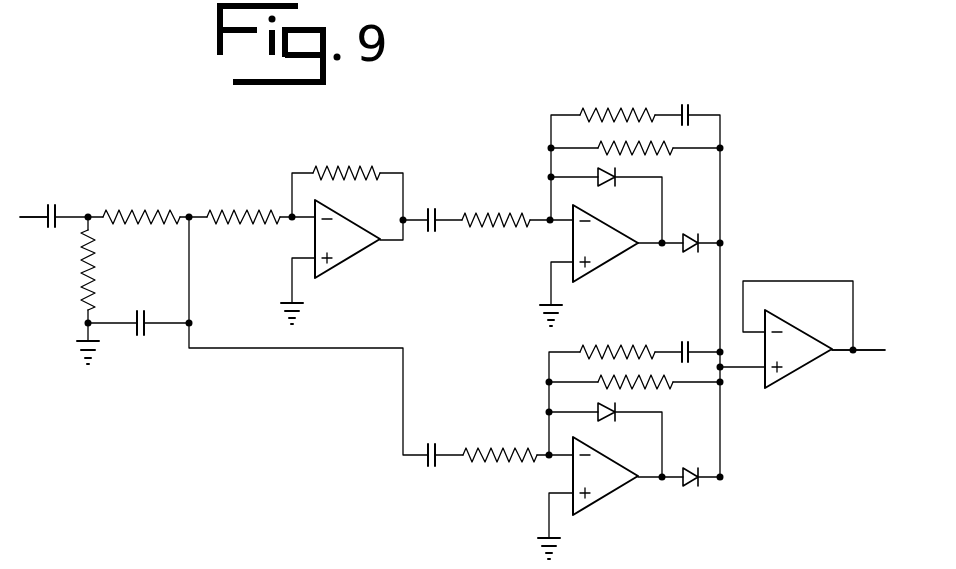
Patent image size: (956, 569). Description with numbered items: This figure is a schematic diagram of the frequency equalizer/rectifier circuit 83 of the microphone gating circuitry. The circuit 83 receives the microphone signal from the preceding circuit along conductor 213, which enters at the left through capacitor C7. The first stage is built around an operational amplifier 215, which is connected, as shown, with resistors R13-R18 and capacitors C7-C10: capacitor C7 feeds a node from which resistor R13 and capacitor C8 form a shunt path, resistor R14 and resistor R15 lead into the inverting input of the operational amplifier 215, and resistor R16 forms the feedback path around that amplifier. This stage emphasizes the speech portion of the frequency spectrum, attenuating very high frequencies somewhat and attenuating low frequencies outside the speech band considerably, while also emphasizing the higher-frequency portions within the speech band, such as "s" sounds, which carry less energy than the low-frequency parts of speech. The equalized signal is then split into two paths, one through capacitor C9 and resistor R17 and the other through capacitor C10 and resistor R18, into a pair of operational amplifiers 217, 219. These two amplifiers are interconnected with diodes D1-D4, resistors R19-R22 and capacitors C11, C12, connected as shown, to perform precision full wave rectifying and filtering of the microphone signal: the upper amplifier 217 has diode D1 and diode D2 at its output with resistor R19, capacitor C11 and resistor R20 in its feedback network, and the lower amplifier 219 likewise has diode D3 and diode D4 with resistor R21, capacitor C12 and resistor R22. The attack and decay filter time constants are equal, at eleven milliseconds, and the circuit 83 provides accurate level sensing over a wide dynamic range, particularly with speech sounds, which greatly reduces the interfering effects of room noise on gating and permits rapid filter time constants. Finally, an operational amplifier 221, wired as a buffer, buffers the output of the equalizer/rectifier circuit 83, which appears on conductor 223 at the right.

The conductor 213 is at (33, 213).
The capacitor C7 is at (60, 205).
The resistor R14 is at (141, 204).
The resistor R15 is at (243, 204).
The resistor R13 is at (70, 270).
The capacitor C8 is at (140, 312).
The resistor R16 is at (346, 162).
The operational amplifier 215 is at (355, 250).
The capacitor C9 is at (430, 209).
The resistor R17 is at (496, 210).
The resistor R19 is at (617, 102).
The capacitor C11 is at (686, 103).
The resistor R20 is at (635, 137).
The diode D1 is at (623, 171).
The diode D2 is at (691, 231).
The operational amplifier 217 is at (607, 253).
The resistor R21 is at (617, 341).
The capacitor C12 is at (686, 343).
The resistor R22 is at (635, 372).
The diode D3 is at (623, 405).
The diode D4 is at (691, 465).
The operational amplifier 219 is at (607, 489).
The capacitor C10 is at (436, 442).
The resistor R18 is at (500, 443).
The operational amplifier 221 is at (800, 357).
The conductor 223 is at (867, 353).
The frequency equalizer/rectifier circuit 83 is at (448, 149).